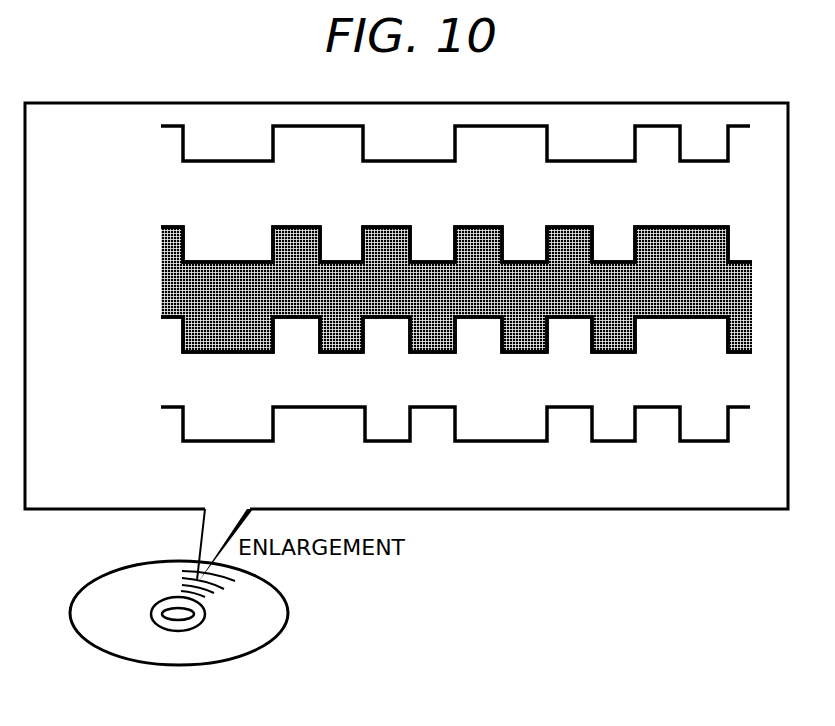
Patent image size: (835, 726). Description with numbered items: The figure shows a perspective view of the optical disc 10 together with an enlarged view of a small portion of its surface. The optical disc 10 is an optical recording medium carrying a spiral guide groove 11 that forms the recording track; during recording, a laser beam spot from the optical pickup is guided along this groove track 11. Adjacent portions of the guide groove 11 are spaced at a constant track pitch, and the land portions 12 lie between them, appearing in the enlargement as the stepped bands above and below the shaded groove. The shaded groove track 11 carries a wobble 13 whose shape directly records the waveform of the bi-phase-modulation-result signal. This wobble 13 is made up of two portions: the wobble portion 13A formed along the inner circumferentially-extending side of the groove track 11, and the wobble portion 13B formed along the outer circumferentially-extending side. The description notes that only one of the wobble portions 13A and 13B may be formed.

The optical disc 10 is at (267, 648).
The guide groove 11 is at (185, 288).
The land portion 12 is at (198, 193).
The wobble 13 is at (577, 363).
The wobble portion 13A is at (457, 334).
The wobble portion 13B is at (412, 243).